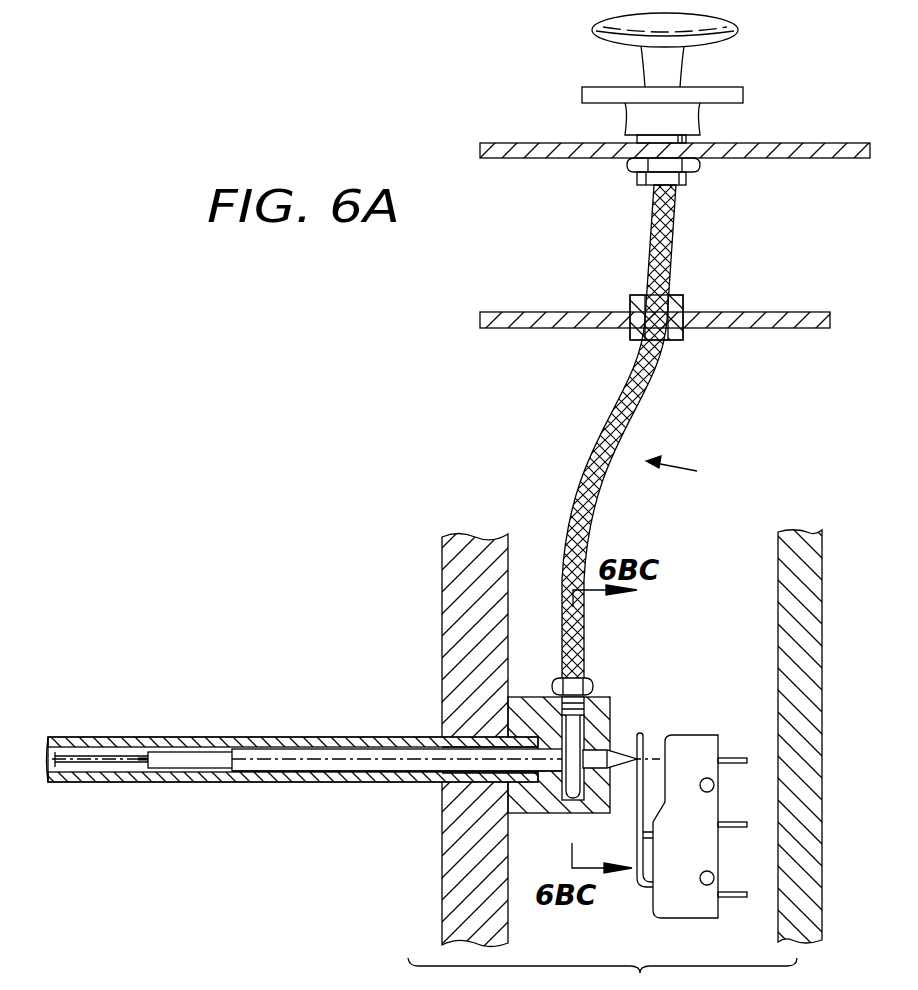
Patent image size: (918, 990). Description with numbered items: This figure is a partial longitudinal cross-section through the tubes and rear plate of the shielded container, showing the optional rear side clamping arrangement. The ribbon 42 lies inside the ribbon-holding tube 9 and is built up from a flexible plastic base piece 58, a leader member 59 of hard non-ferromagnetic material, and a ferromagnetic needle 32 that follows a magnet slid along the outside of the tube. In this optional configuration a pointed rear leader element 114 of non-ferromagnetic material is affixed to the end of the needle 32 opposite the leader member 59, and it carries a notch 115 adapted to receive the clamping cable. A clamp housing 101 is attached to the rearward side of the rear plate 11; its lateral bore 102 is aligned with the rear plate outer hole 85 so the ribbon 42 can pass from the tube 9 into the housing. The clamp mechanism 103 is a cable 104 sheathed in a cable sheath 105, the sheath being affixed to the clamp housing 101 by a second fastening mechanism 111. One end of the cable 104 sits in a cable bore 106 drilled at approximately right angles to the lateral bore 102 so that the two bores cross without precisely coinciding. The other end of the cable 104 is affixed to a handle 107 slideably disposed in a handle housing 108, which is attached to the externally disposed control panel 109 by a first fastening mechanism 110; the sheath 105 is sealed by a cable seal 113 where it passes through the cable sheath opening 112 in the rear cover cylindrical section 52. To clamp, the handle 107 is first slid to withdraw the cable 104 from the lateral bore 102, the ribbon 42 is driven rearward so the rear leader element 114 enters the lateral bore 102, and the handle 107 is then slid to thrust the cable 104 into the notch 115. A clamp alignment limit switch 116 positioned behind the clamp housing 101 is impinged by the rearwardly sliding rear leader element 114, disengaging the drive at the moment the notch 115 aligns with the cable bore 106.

The ribbon-holding tube 9 is at (100, 737).
The rear plate 11 is at (442, 604).
The ferromagnetic needle 32 is at (320, 772).
The ribbon 42 is at (278, 752).
The rear cover cylindrical section 52 is at (530, 312).
The base piece 58 is at (87, 762).
The leader member 59 is at (188, 767).
The rear plate outer hole 85 is at (448, 738).
The clamp housing 101 is at (600, 696).
The lateral bore 102 is at (594, 731).
The clamp mechanism 103 is at (695, 471).
The cable 104 is at (573, 800).
The cable sheath 105 is at (652, 388).
The cable bore 106 is at (565, 803).
The handle 107 is at (717, 22).
The handle housing 108 is at (733, 98).
The control panel 109 is at (520, 142).
The first fastening mechanism 110 is at (687, 181).
The second fastening mechanism 111 is at (551, 684).
The cable sheath opening 112 is at (683, 297).
The cable seal 113 is at (640, 293).
The rear leader element 114 is at (487, 766).
The notch 115 is at (563, 750).
The clamp alignment limit switch 116 is at (697, 733).